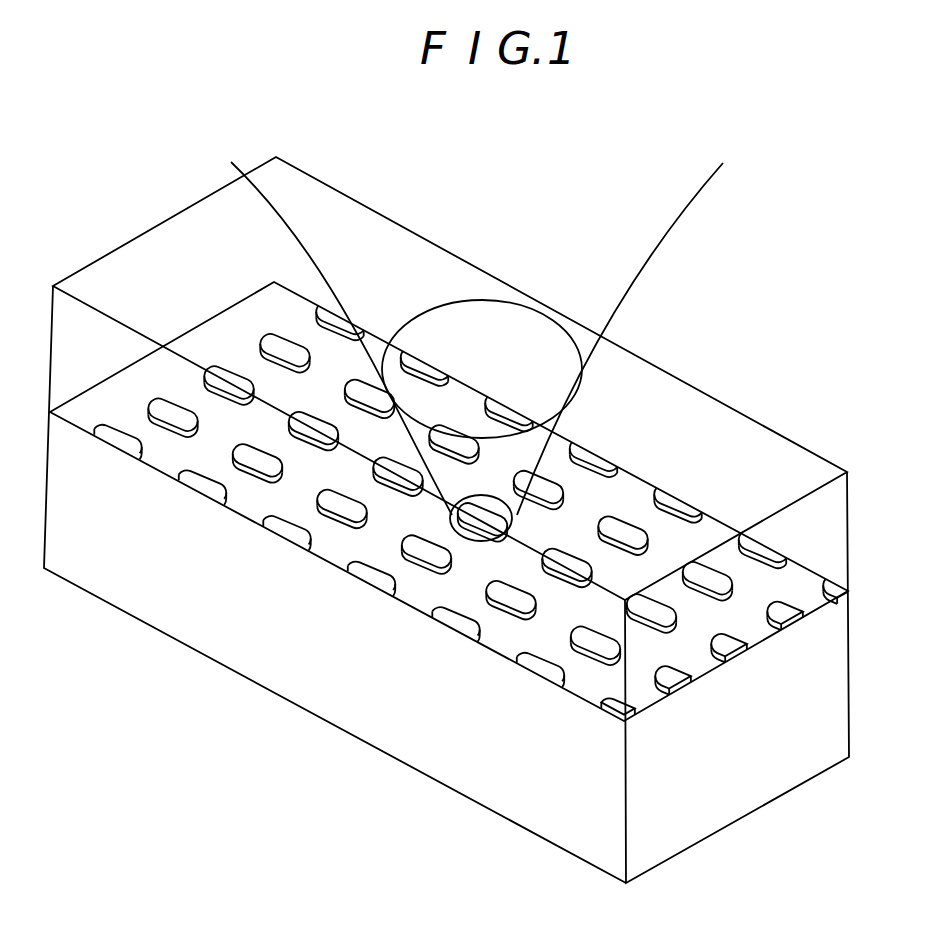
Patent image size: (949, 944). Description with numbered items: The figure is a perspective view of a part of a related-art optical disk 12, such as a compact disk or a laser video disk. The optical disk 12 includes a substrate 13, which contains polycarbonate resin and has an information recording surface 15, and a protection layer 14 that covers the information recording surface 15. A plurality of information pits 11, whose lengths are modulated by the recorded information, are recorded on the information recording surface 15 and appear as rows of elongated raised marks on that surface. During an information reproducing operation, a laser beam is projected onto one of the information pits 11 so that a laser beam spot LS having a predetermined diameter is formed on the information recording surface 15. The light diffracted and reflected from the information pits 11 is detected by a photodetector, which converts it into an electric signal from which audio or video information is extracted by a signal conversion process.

The information pits 11 is at (617, 520).
The optical disk 12 is at (482, 520).
The substrate 13 is at (720, 346).
The protection layer 14 is at (833, 712).
The information recording surface 15 is at (787, 583).
The laser beam spot LS is at (482, 540).